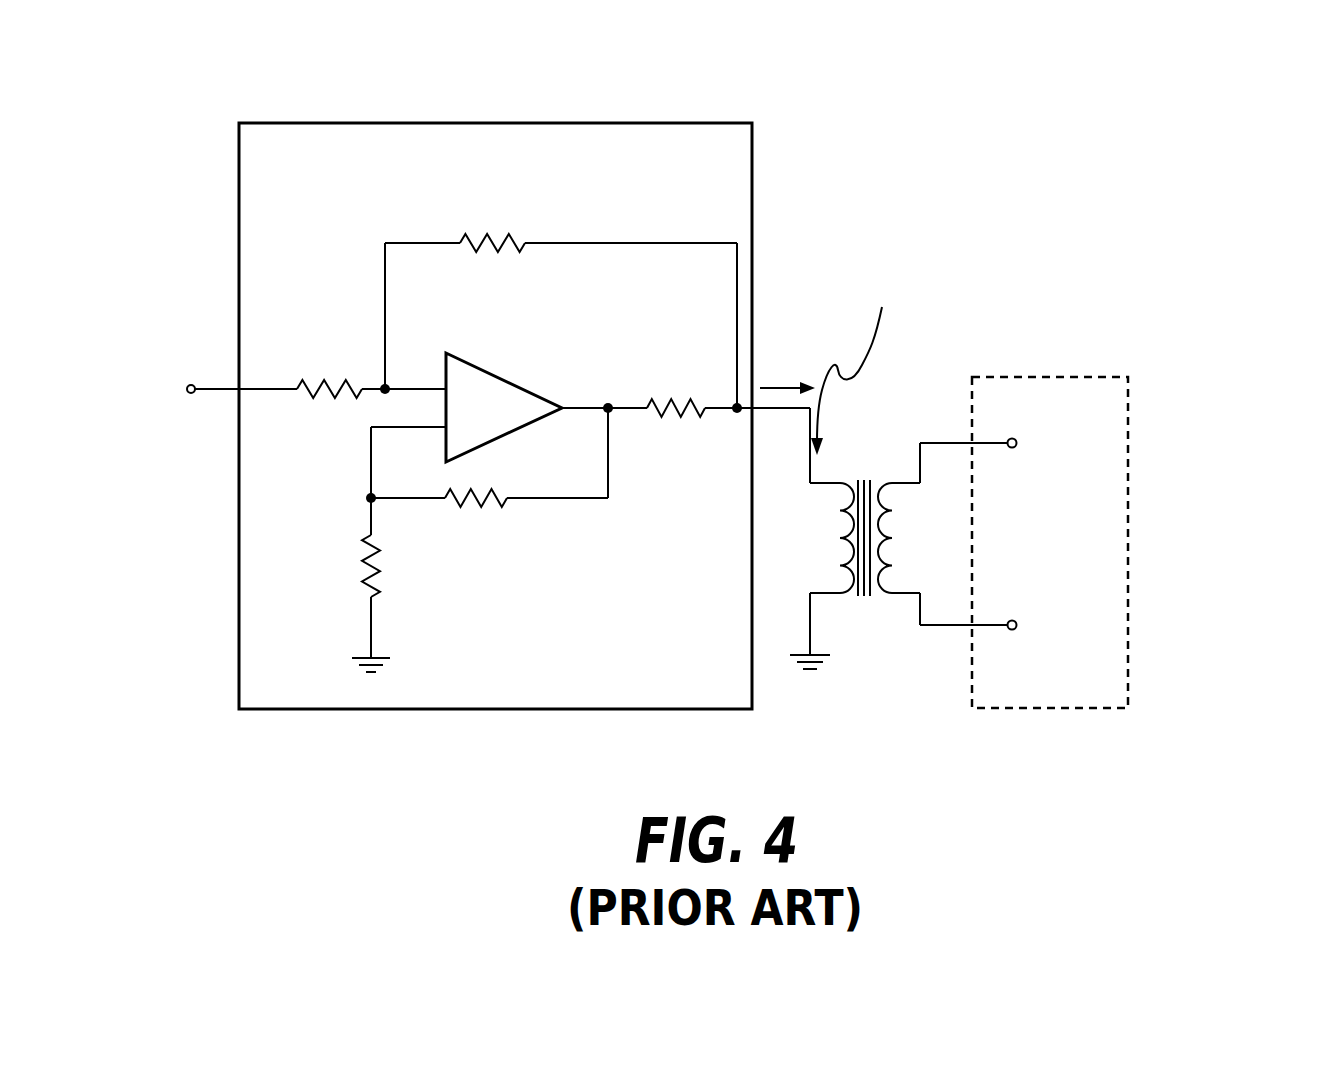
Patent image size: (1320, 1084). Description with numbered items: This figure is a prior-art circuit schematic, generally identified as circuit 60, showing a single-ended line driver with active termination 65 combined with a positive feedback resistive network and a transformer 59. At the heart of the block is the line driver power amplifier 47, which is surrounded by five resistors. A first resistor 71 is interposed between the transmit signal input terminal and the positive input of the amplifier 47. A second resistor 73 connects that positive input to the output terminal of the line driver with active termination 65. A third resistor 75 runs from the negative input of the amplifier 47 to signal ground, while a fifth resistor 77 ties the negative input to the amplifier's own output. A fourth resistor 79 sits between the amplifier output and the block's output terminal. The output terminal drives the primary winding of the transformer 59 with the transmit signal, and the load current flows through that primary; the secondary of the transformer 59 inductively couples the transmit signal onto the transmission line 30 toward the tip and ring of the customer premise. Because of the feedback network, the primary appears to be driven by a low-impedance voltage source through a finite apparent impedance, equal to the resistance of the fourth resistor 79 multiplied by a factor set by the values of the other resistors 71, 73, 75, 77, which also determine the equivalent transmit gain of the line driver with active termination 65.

The circuit schematic 60 is at (1050, 105).
The line driver with active termination 65 is at (658, 123).
The first resistor 71 is at (343, 382).
The second resistor 73 is at (483, 236).
The line driver power amplifier 47 is at (498, 375).
The fifth resistor 77 is at (497, 493).
The third resistor 75 is at (365, 550).
The fourth resistor 79 is at (698, 412).
The transformer 59 is at (842, 560).
The transmission line 30 is at (1022, 377).